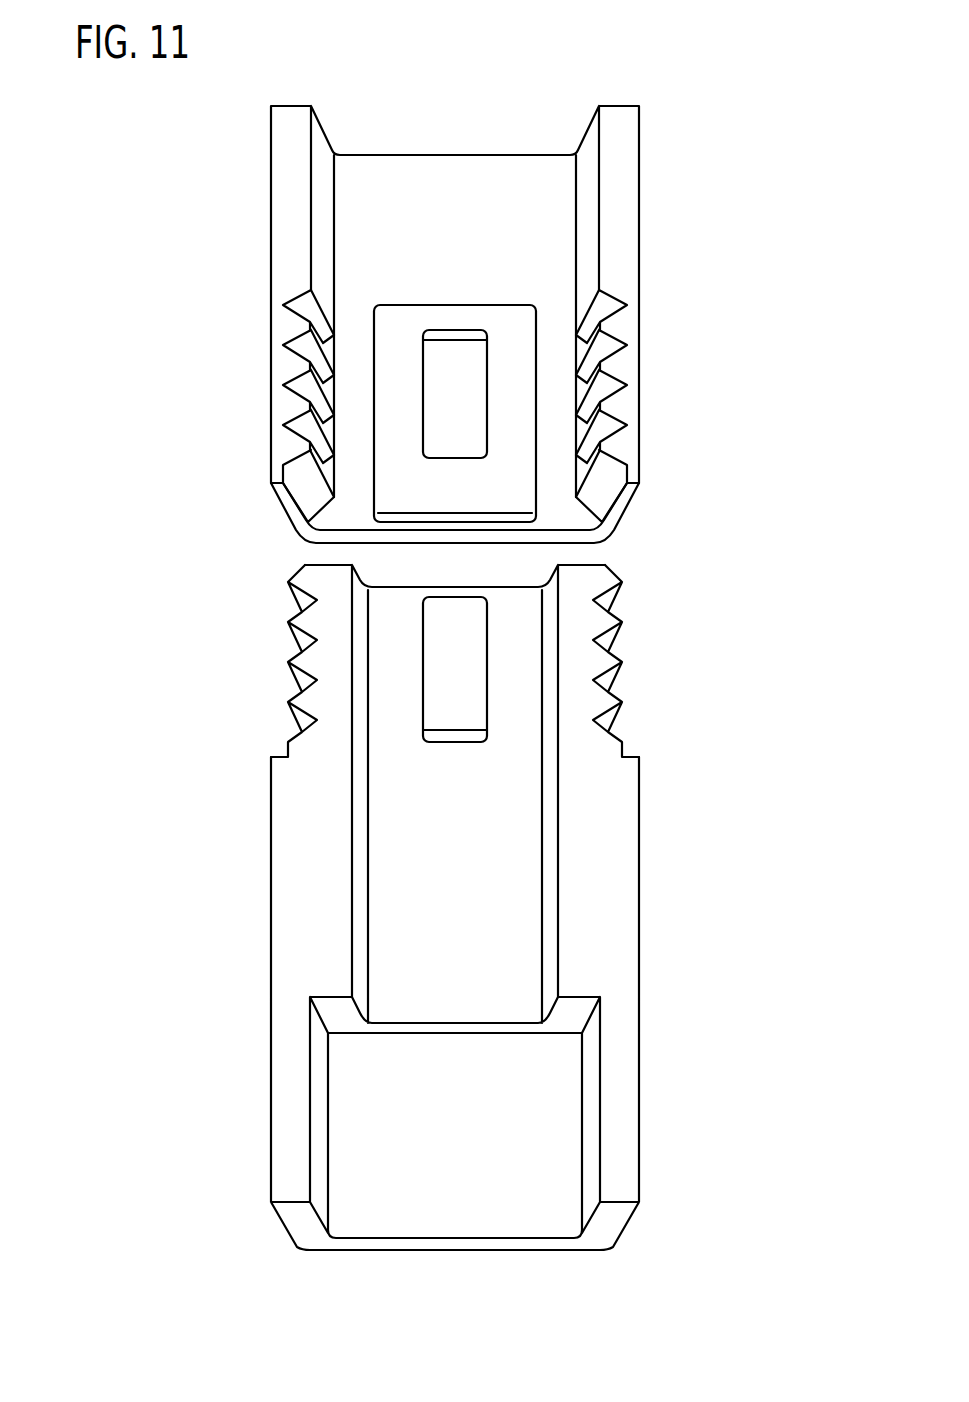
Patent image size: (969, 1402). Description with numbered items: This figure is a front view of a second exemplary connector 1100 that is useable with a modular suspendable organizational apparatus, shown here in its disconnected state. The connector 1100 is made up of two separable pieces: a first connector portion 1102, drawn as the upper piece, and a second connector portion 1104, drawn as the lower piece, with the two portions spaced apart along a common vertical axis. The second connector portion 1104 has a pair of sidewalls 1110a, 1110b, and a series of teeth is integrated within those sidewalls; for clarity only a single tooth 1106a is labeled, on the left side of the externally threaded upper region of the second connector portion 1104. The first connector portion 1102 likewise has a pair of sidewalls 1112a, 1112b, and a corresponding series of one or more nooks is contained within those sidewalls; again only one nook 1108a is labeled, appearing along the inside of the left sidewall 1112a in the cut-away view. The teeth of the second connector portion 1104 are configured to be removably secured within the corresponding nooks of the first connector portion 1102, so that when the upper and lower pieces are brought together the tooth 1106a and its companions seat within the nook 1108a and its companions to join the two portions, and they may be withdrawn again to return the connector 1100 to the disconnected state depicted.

The connector 1100 is at (575, 32).
The first connector portion 1102 is at (667, 267).
The second connector portion 1104 is at (665, 795).
The tooth 1106a is at (297, 658).
The nook 1108a is at (300, 338).
The sidewall 1110a is at (290, 908).
The sidewall 1110b is at (620, 908).
The sidewall 1112a is at (288, 210).
The sidewall 1112b is at (620, 210).